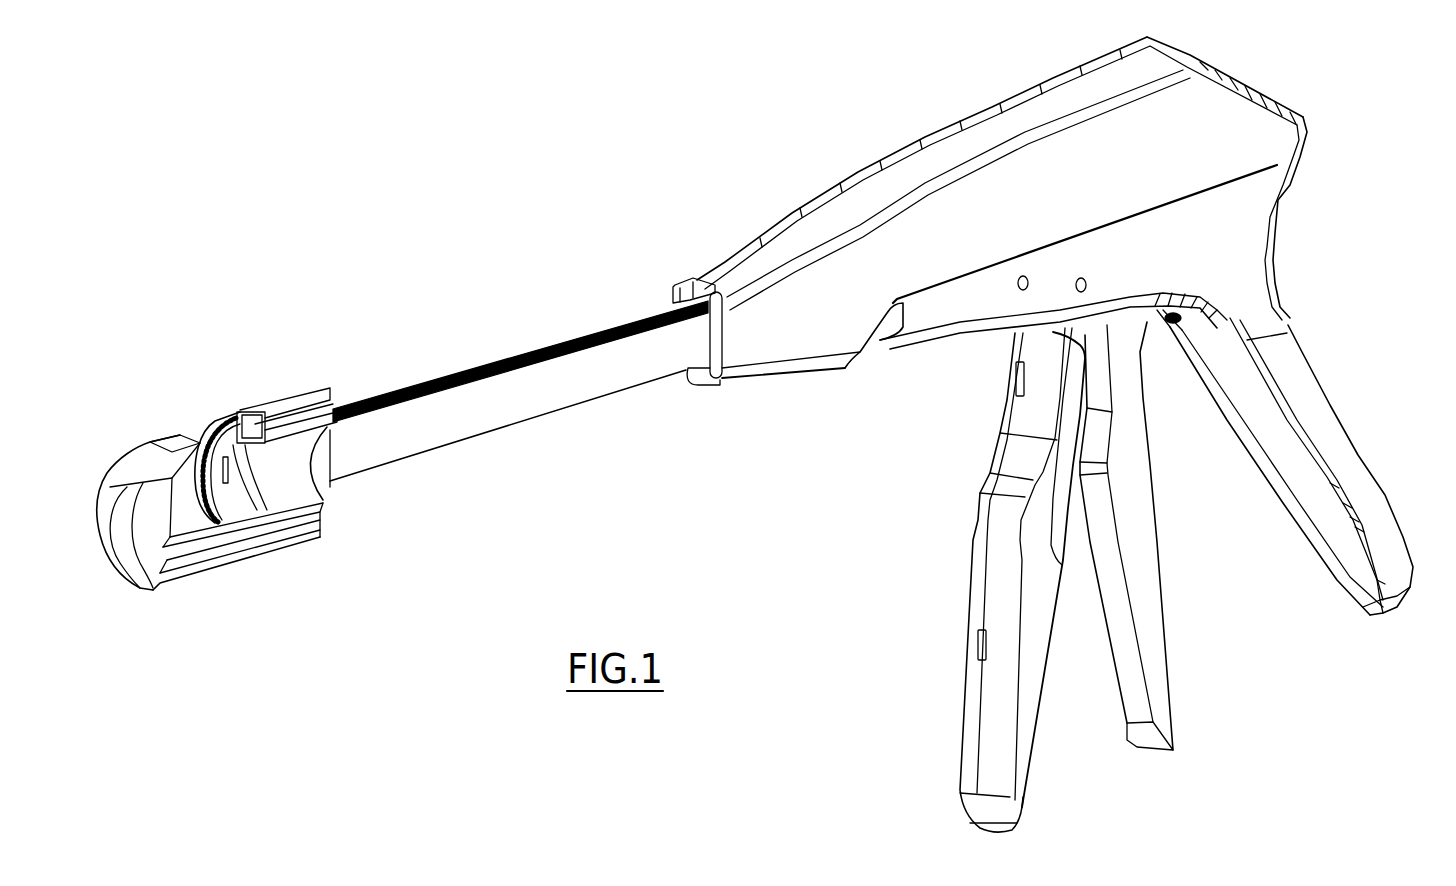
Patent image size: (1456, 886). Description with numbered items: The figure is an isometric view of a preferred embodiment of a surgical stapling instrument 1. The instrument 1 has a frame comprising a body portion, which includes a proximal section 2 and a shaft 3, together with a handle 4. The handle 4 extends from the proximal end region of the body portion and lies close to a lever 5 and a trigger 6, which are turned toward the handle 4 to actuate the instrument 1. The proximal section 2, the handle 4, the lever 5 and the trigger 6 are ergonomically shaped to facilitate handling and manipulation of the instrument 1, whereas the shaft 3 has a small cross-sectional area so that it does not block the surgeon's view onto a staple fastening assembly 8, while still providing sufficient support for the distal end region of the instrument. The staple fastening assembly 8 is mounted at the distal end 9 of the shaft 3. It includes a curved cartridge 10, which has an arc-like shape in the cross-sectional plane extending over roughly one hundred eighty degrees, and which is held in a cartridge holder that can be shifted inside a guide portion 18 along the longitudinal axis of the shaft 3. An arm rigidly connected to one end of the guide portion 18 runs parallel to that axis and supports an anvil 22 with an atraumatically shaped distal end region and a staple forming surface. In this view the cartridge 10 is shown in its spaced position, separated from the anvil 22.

The surgical stapling instrument 1 is at (696, 446).
The proximal section 2 is at (947, 122).
The shaft 3 is at (487, 363).
The handle 4 is at (1347, 407).
The lever 5 is at (1167, 632).
The trigger 6 is at (953, 707).
The staple fastening assembly 8 is at (240, 562).
The distal end 9 is at (330, 487).
The cartridge 10 is at (203, 423).
The guide portion 18 is at (297, 390).
The anvil 22 is at (150, 440).